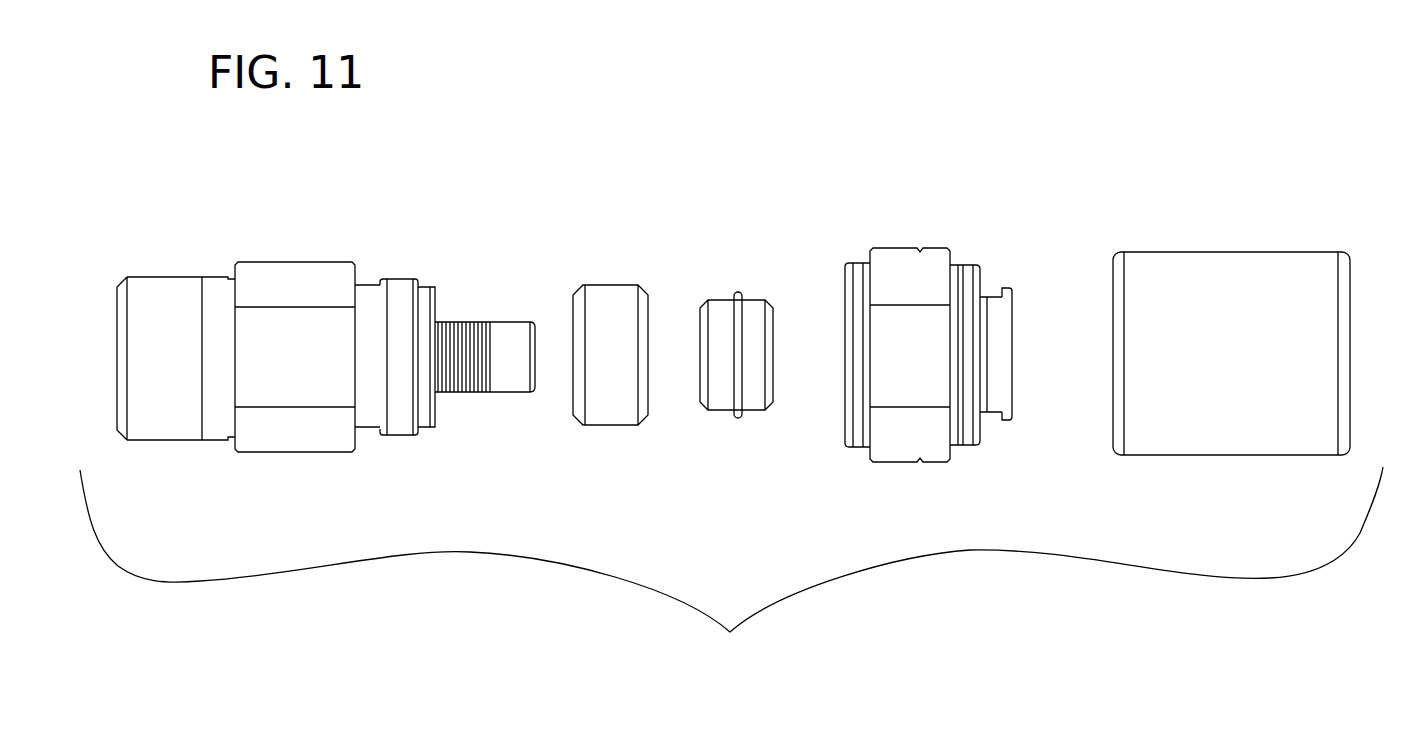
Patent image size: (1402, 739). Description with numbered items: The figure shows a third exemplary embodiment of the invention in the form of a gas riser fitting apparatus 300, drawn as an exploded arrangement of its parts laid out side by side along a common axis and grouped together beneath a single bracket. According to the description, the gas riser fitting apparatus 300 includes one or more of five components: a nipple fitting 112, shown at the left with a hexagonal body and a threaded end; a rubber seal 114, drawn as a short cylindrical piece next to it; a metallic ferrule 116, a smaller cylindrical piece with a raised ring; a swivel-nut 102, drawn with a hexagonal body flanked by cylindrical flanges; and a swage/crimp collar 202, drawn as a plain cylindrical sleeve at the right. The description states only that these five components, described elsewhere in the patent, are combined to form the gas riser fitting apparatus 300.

The nipple fitting 112 is at (280, 443).
The rubber seal 114 is at (614, 412).
The metallic ferrule 116 is at (726, 402).
The swivel-nut 102 is at (905, 440).
The swage/crimp collar 202 is at (1260, 435).
The gas riser fitting apparatus 300 is at (731, 570).